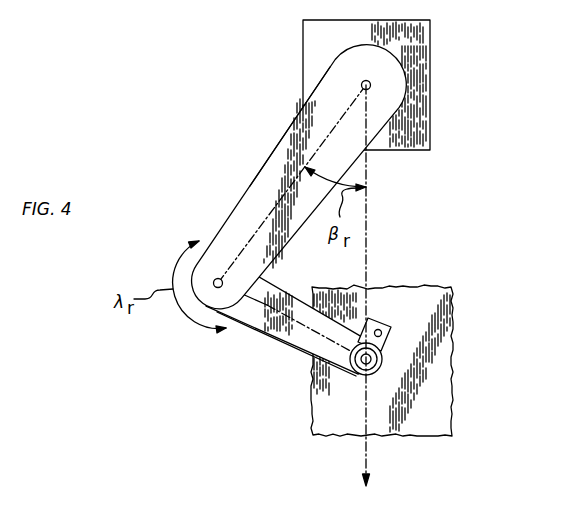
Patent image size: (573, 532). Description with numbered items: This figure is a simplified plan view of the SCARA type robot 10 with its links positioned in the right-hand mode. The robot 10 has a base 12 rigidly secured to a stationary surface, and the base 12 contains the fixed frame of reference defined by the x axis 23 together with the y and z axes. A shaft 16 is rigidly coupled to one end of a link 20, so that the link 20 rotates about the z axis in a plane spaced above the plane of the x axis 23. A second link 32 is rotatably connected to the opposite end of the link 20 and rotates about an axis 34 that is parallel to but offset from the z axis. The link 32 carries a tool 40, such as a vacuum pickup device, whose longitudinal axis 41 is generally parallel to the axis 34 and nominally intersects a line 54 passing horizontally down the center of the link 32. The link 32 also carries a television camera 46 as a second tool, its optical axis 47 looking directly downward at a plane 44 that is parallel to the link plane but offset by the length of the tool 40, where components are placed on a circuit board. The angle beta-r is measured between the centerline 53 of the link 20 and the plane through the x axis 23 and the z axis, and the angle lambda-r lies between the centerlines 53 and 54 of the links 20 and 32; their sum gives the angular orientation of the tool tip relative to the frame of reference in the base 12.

The SCARA type robot 10 is at (520, 47).
The base 12 is at (431, 110).
The shaft 16 is at (371, 83).
The link 20 is at (247, 190).
The x axis 23 is at (368, 208).
The link 32 is at (284, 343).
The axis 34 is at (223, 283).
The tool 40 is at (360, 374).
The longitudinal axis 41 is at (377, 376).
The plane 44 is at (444, 402).
The television camera 46 is at (384, 343).
The optical axis 47 is at (384, 310).
The centerline 53 is at (304, 106).
The line 54 is at (296, 342).